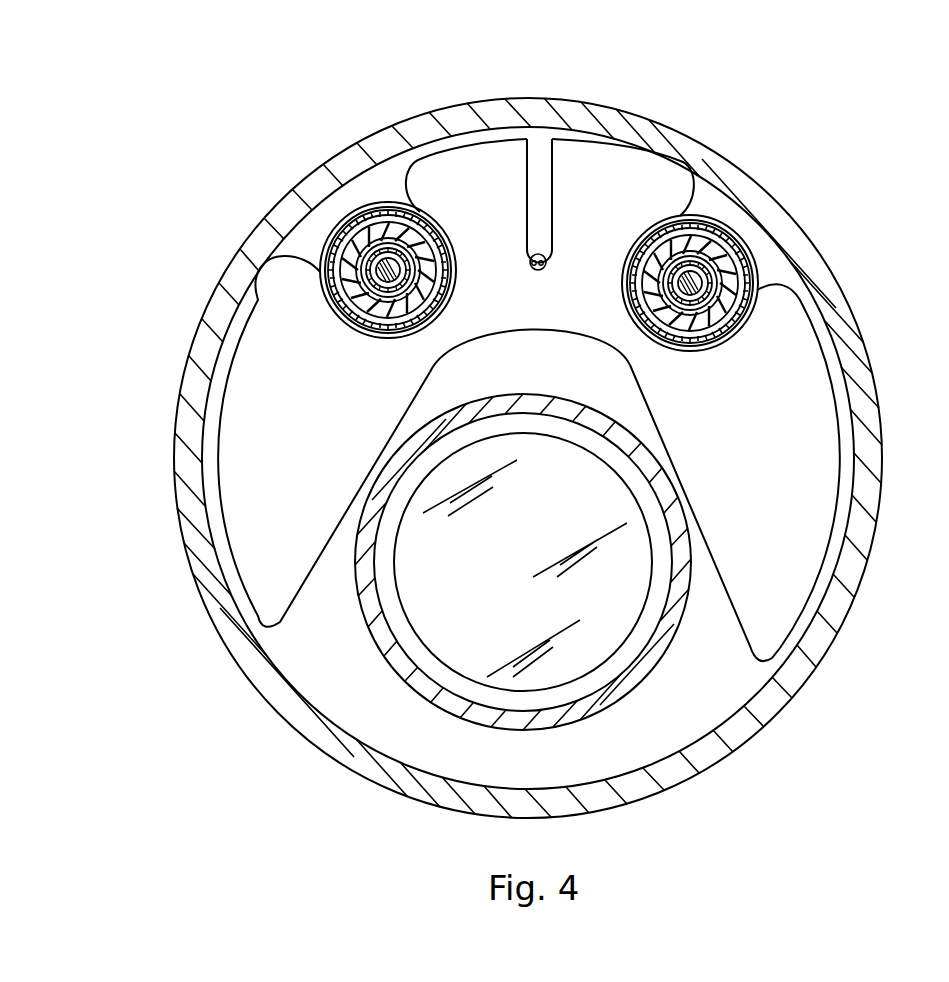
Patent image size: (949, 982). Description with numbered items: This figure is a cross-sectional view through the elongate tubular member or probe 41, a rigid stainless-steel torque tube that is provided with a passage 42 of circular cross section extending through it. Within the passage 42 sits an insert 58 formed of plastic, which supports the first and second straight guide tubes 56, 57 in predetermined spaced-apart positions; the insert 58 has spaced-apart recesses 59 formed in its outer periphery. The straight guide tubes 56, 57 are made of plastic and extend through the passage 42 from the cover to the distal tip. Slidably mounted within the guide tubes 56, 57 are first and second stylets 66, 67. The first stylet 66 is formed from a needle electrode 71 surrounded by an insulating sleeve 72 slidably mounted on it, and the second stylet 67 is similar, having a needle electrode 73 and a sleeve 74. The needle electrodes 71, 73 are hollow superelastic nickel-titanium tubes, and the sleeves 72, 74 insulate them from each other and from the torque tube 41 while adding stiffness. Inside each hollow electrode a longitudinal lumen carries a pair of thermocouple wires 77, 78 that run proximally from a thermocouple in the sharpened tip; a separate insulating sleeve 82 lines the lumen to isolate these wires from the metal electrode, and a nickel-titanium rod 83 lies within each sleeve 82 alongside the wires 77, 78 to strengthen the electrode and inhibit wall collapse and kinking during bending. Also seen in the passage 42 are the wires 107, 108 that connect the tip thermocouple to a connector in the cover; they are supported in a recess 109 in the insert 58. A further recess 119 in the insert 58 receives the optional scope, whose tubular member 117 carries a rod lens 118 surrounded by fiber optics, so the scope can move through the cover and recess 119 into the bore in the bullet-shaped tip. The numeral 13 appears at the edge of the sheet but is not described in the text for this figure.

The elongate tubular member or probe 41 is at (790, 148).
The passage 42 is at (720, 725).
The first straight guide tube 56 is at (402, 274).
The second straight guide tube 57 is at (712, 278).
The insert 58 is at (843, 478).
The recesses 59 is at (303, 232).
The first stylet 66 is at (428, 208).
The second stylet 67 is at (656, 226).
The needle electrode 71 is at (420, 262).
The sleeve 72 is at (400, 290).
The needle electrode 73 is at (712, 278).
The sleeve 74 is at (722, 222).
The thermocouple wire 77 is at (345, 300).
The thermocouple wire 78 is at (387, 282).
The insulating sleeve 82 is at (440, 290).
The nickel-titanium rod 83 is at (624, 310).
The wire 107 is at (538, 269).
The wire 108 is at (548, 262).
The recess 109 is at (543, 252).
The tubular member 117 is at (357, 598).
The rod lens 118 is at (467, 633).
The recess 119 is at (765, 668).
The instrument 13 is at (939, 604).